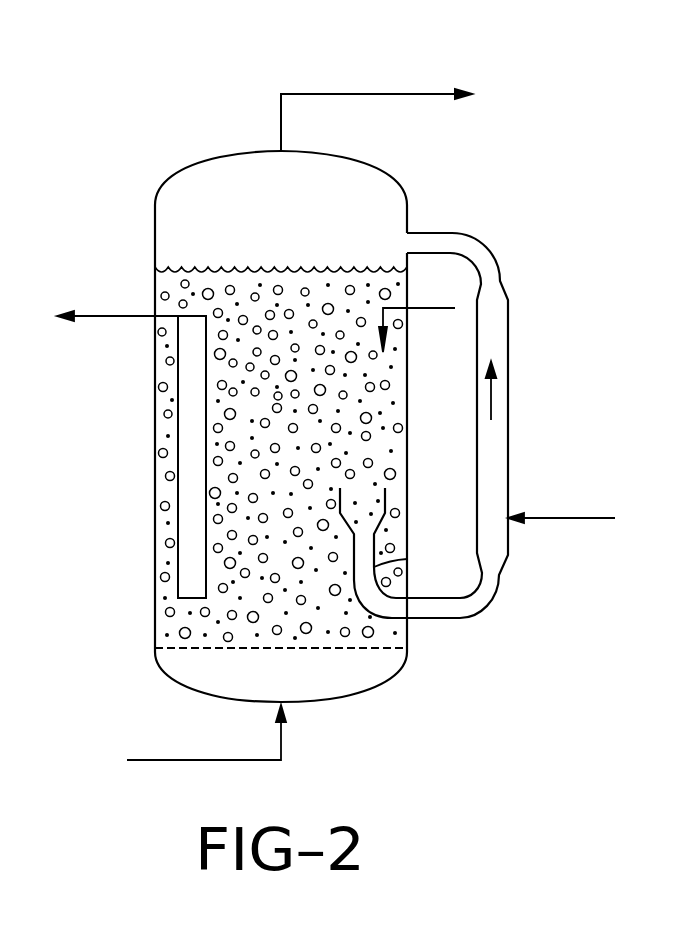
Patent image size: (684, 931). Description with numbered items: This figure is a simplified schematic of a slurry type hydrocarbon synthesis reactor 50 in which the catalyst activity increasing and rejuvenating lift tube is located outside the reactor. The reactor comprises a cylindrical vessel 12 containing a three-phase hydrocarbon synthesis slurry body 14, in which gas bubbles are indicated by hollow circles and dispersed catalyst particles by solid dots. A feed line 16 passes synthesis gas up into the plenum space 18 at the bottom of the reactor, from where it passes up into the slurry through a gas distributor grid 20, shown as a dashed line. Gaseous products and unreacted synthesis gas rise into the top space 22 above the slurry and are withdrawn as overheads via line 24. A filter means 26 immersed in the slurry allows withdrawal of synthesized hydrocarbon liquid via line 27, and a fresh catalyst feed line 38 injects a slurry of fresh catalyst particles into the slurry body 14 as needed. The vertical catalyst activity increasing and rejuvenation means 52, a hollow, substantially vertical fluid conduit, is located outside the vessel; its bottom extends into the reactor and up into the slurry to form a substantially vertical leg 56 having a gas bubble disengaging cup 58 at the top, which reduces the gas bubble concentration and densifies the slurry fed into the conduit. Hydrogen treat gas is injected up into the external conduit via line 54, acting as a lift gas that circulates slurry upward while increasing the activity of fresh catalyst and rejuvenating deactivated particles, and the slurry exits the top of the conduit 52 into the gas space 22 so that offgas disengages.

The slurry type hydrocarbon synthesis reactor 50 is at (150, 128).
The cylindrical vessel 12 is at (397, 185).
The slurry body 14 is at (180, 295).
The feed line 16 is at (180, 762).
The plenum space 18 is at (297, 687).
The gas distributor grid 20 is at (335, 652).
The top space 22 is at (302, 216).
The overhead line 24 is at (372, 95).
The filter means 26 is at (178, 470).
The hydrocarbon liquid withdrawal line 27 is at (115, 318).
The fresh catalyst feed line 38 is at (455, 309).
The catalyst activity increasing and rejuvenation means 52 is at (507, 412).
The hydrogen treat gas line 54 is at (582, 517).
The vertical leg 56 is at (407, 559).
The gas bubble disengaging cup 58 is at (386, 497).